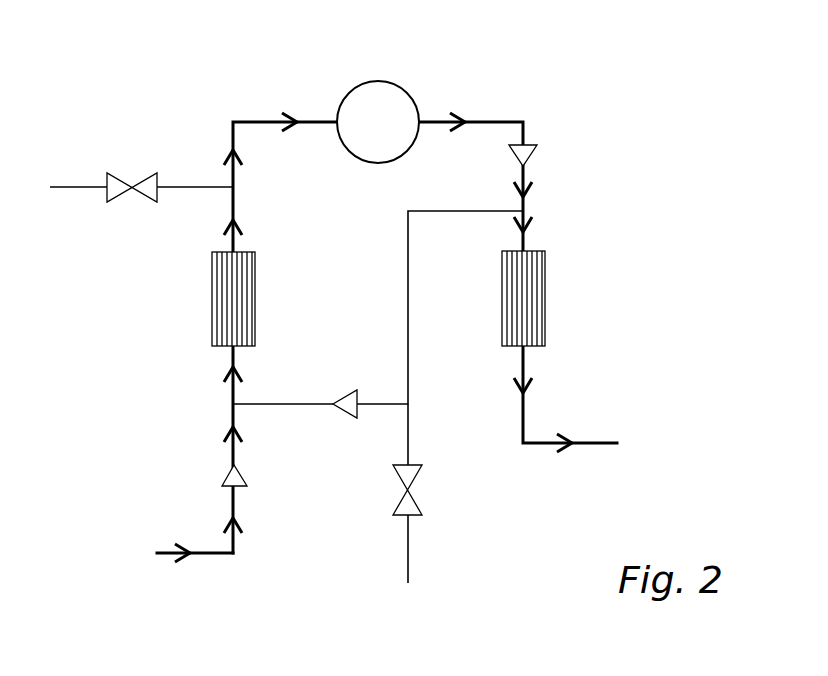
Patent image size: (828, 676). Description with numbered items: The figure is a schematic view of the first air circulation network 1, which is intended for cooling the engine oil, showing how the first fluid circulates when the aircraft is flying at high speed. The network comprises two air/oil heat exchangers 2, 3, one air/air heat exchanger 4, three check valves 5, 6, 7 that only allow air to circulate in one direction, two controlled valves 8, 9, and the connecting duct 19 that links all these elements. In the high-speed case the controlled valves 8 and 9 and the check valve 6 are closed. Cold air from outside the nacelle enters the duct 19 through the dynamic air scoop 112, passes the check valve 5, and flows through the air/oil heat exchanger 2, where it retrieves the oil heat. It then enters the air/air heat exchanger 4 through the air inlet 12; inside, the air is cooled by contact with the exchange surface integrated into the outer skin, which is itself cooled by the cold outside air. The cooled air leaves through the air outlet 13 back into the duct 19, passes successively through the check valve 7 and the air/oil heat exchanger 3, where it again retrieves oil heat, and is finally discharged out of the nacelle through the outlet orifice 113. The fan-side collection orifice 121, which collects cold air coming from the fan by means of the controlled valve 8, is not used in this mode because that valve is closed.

The first air circulation network 1 is at (585, 92).
The air/oil heat exchanger 2 is at (212, 318).
The air/oil heat exchanger 3 is at (545, 298).
The air/air heat exchanger 4 is at (405, 88).
The check valve 5 is at (227, 473).
The check valve 6 is at (345, 394).
The check valve 7 is at (533, 157).
The controlled valve 8 is at (415, 499).
The controlled valve 9 is at (121, 176).
The air inlet 12 is at (338, 118).
The air outlet 13 is at (418, 118).
The duct 19 is at (195, 187).
The dynamic air scoop 112 is at (157, 553).
The outlet orifice 113 is at (617, 443).
The fan-side collection orifice 121 is at (408, 583).